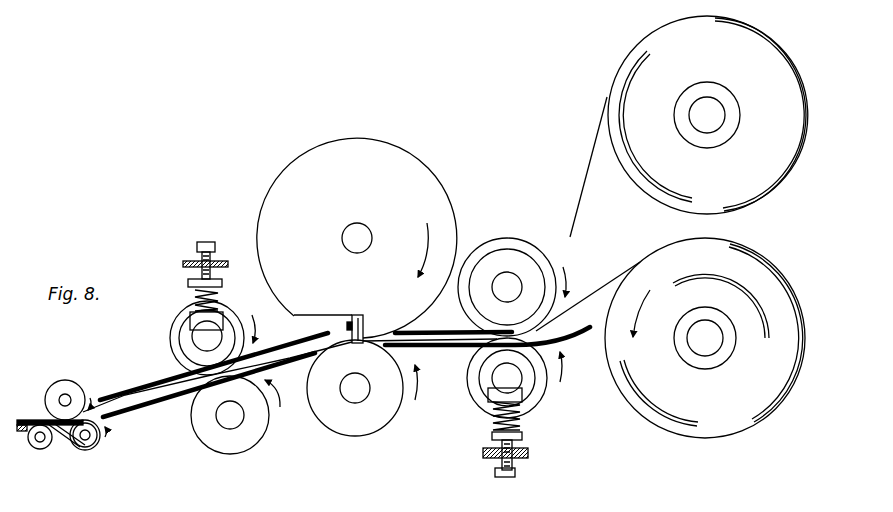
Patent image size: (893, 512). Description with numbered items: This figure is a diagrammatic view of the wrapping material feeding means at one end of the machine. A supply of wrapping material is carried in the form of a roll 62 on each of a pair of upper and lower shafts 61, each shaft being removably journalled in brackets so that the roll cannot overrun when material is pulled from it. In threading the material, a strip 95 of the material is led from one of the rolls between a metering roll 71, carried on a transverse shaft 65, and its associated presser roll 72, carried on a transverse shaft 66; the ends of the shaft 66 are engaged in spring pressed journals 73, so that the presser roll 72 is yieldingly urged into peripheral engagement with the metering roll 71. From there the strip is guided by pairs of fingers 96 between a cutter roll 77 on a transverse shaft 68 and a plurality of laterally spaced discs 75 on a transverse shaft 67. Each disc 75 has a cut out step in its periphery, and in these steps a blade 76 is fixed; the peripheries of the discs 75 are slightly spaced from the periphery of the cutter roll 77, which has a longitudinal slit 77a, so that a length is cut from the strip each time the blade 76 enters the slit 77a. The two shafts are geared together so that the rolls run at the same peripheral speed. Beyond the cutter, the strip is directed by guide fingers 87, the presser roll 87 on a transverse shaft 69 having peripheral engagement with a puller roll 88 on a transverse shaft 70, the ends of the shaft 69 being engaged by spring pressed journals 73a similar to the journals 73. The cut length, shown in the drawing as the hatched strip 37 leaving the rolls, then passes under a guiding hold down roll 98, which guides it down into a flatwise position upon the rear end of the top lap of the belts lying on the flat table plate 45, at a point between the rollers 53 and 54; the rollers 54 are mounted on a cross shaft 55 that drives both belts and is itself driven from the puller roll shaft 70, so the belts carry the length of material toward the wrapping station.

The strip 37 is at (214, 363).
The table plate 45 is at (25, 431).
The roller 53 is at (40, 449).
The roller 54 is at (92, 441).
The cross shaft 55 is at (85, 447).
The shaft 61 is at (705, 102).
The roll 62 is at (755, 191).
The transverse shaft 65 is at (511, 273).
The transverse shaft 66 is at (510, 380).
The transverse shaft 67 is at (347, 228).
The transverse shaft 68 is at (360, 402).
The transverse shaft 69 is at (195, 336).
The transverse shaft 70 is at (224, 415).
The metering roll 71 is at (495, 240).
The presser roll 72 is at (522, 414).
The spring pressed journal 73 is at (527, 431).
The spring pressed journal 73a is at (186, 284).
The disc 75 is at (273, 192).
The blade 76 is at (347, 326).
The cutter roll 77 is at (397, 411).
The longitudinal slit 77a is at (355, 388).
The presser roll 87 is at (233, 312).
The puller roll 88 is at (228, 454).
The strip 95 is at (599, 289).
The finger 96 is at (457, 348).
The hold down roll 98 is at (64, 380).